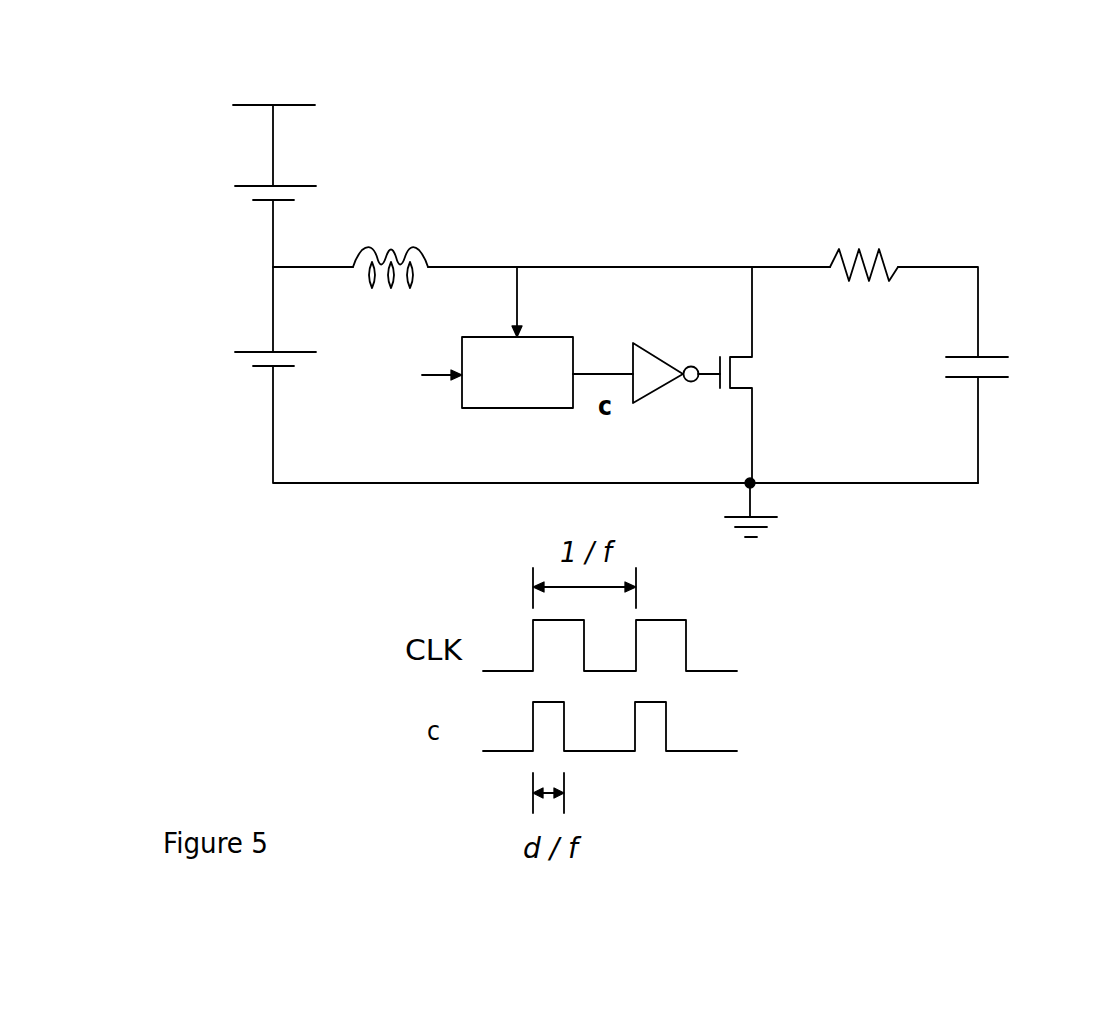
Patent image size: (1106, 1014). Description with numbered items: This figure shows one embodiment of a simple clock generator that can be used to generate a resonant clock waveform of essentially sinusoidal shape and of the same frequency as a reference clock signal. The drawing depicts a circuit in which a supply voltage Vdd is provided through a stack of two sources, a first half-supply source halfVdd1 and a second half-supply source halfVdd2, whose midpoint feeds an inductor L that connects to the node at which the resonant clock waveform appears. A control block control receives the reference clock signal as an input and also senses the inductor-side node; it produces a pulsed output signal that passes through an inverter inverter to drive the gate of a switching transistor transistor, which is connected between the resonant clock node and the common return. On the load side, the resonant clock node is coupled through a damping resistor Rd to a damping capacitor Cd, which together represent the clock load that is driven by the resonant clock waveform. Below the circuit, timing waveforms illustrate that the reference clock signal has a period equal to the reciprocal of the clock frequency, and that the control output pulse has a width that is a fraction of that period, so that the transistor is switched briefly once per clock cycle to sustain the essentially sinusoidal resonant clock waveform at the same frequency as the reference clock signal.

The supply voltage Vdd is at (274, 121).
The half Vdd source halfVdd1 is at (227, 187).
The half Vdd source halfVdd2 is at (227, 353).
The inductor L is at (390, 247).
The control block control is at (517, 337).
The element inverter is at (676, 373).
The transistor switch transistor is at (736, 375).
The damping resistor Rd is at (864, 242).
The damping capacitor Cd is at (1006, 360).